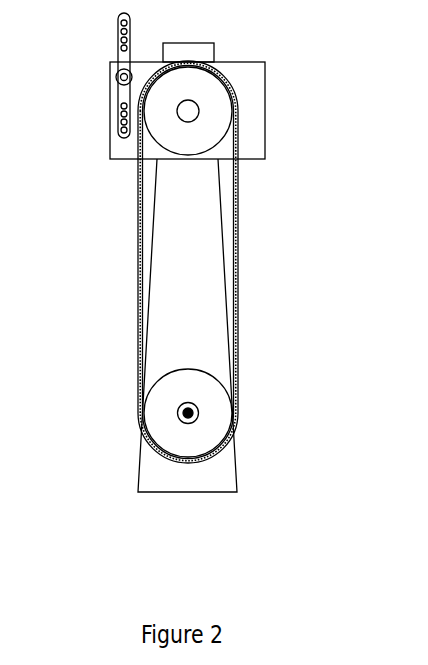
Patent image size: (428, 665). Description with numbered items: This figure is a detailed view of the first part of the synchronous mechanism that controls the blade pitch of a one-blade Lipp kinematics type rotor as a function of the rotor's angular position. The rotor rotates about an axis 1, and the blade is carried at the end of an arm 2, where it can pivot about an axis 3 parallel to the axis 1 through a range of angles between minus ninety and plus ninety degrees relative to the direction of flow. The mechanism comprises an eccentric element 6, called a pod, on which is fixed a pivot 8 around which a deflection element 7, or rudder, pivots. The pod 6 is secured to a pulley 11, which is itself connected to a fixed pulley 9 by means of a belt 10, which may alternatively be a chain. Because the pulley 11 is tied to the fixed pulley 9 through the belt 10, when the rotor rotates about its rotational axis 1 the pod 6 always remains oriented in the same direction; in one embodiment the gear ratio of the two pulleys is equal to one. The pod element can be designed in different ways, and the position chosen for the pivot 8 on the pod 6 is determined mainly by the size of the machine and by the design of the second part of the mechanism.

The axis 1 is at (243, 436).
The arm 2 is at (222, 325).
The axis 3 is at (242, 141).
The eccentric element 6 is at (262, 106).
The deflection element 7 is at (85, 75).
The pivot 8 is at (86, 97).
The fixed pulley 9 is at (144, 414).
The belt 10 is at (148, 262).
The pulley 11 is at (143, 142).